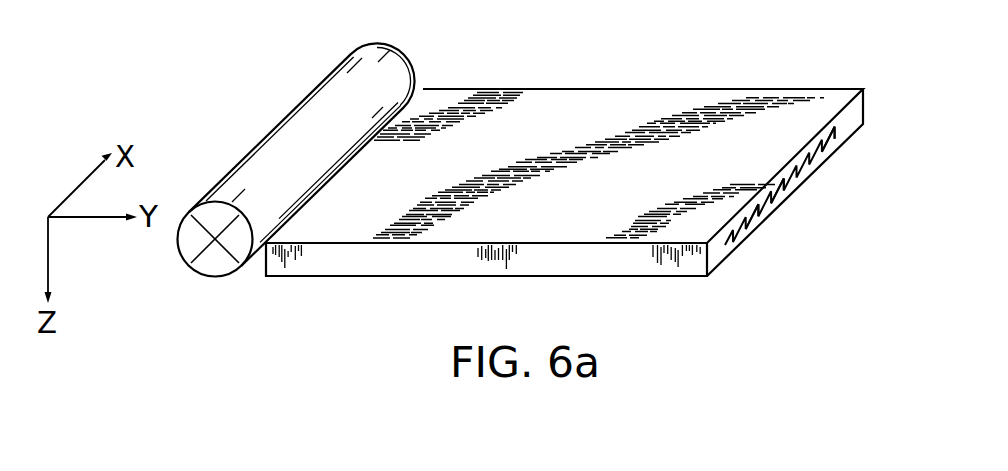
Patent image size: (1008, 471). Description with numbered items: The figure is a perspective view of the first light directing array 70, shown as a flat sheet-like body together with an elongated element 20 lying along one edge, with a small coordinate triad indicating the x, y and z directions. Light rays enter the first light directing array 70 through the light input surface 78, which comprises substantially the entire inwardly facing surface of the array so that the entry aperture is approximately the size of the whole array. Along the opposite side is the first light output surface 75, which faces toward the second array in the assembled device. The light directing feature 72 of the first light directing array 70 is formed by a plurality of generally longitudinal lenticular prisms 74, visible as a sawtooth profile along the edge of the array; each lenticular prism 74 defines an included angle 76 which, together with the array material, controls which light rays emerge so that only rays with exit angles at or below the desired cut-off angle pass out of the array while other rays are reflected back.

The light source lamp 20 is at (335, 112).
The first light directing array 70 is at (518, 255).
The first light directing feature 72 is at (814, 174).
The lenticular prism 74 is at (753, 218).
The first light output surface 75 is at (785, 193).
The included angle 76 is at (827, 128).
The light input surface 78 is at (592, 105).